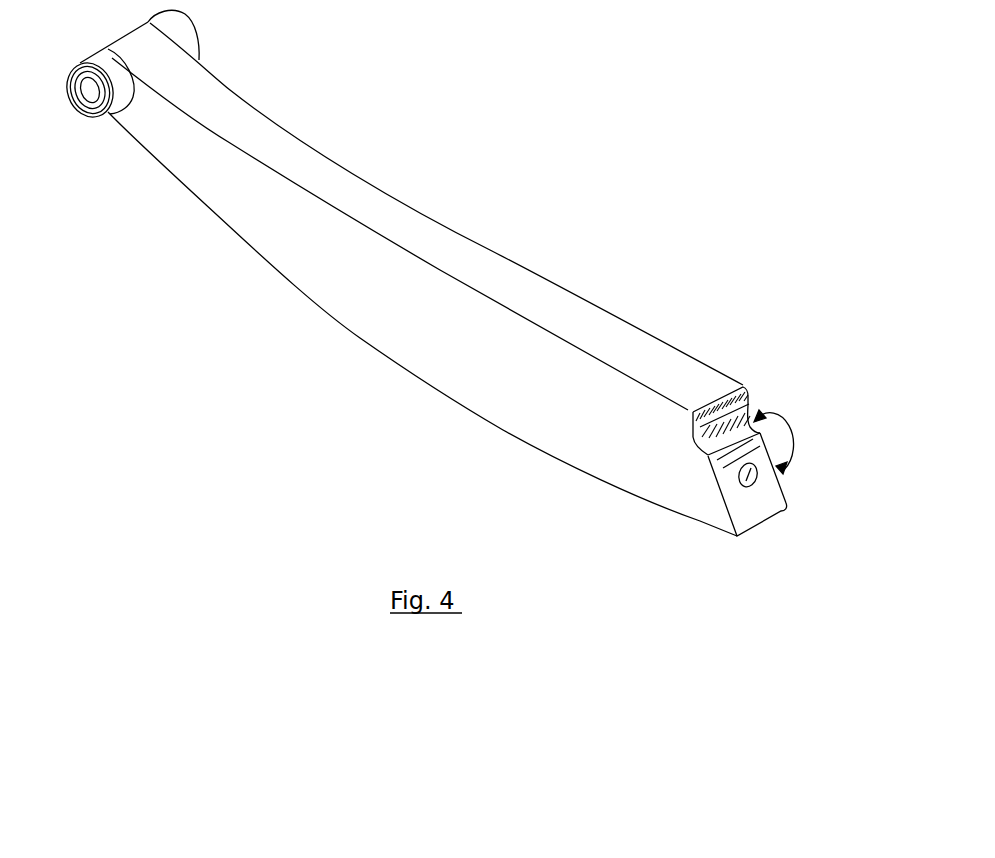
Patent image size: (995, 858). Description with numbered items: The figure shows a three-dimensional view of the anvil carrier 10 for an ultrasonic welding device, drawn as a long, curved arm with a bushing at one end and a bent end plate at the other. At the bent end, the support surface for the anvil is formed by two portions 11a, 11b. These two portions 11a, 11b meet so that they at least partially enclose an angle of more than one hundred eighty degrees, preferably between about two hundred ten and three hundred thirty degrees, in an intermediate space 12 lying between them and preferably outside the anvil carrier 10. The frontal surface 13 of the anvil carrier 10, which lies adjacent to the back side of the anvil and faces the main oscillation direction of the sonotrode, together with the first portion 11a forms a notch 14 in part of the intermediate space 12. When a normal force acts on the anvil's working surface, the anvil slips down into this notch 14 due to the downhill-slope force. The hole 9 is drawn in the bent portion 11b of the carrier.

The hole 9 is at (745, 487).
The anvil carrier 10 is at (383, 333).
The portion of the support surface 11a is at (697, 443).
The portion of the support surface 11b is at (770, 507).
The intermediate space 12 is at (827, 409).
The frontal surface 13 is at (723, 407).
The notch 14 is at (751, 423).